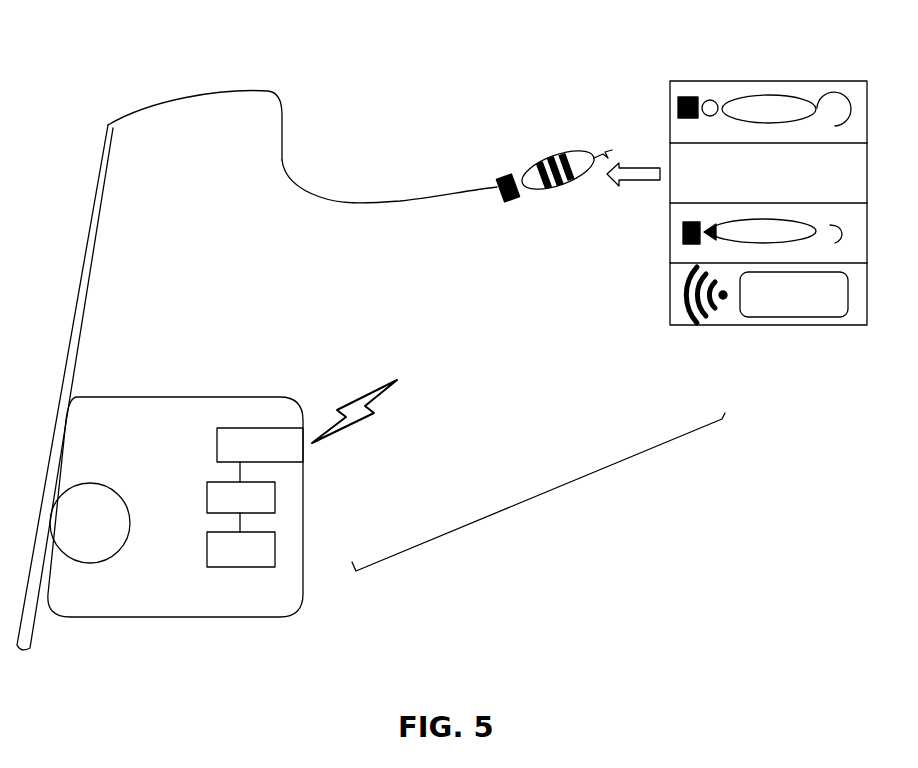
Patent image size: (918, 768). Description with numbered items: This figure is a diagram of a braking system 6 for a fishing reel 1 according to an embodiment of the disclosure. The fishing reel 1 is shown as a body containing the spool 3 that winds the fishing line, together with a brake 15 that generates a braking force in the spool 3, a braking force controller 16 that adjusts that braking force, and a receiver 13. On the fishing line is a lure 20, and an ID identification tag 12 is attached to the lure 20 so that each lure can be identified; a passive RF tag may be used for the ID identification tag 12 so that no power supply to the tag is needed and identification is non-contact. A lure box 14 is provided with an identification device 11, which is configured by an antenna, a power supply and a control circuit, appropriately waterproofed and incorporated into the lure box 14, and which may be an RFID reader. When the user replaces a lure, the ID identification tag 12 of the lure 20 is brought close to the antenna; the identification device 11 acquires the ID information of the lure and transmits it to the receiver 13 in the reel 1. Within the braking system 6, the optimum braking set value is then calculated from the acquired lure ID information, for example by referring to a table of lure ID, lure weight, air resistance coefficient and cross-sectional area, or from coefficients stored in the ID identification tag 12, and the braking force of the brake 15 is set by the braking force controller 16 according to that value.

The fishing reel 1 is at (203, 396).
The spool 3 is at (105, 527).
The braking system 6 is at (560, 488).
The identification device 11 is at (773, 303).
The ID identification tag 12 is at (506, 205).
The receiver 13 is at (303, 450).
The lure box 14 is at (794, 80).
The brake 15 is at (265, 545).
The braking force controller 16 is at (265, 497).
The lure 20 is at (560, 153).